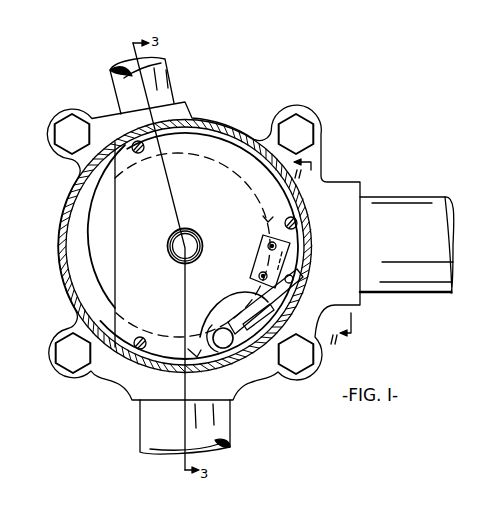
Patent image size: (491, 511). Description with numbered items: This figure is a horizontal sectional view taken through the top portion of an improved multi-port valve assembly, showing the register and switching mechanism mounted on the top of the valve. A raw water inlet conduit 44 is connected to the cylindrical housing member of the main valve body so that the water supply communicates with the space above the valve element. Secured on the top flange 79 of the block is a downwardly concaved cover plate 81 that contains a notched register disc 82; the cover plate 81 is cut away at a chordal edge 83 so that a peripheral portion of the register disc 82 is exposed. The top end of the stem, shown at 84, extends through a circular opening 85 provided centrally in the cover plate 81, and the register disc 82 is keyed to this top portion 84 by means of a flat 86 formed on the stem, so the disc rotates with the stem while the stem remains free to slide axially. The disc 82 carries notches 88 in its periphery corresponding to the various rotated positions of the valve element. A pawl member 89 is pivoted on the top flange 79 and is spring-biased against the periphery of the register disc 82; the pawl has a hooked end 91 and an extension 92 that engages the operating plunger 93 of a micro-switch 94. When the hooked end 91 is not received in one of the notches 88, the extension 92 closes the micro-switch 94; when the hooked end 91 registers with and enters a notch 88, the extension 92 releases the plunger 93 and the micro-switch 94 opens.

The raw water inlet conduit 44 is at (407, 200).
The top flange 79 is at (110, 333).
The cover plate 81 is at (117, 318).
The notched register disc 82 is at (97, 223).
The chordal edge 83 is at (193, 353).
The top end of stem 84 is at (175, 240).
The circular opening 85 is at (200, 255).
The flat 86 is at (198, 242).
The notches 88 is at (98, 270).
The pawl member 89 is at (227, 350).
The hooked end 91 is at (227, 307).
The extension 92 is at (280, 297).
The operating plunger 93 is at (290, 278).
The micro-switch 94 is at (293, 253).